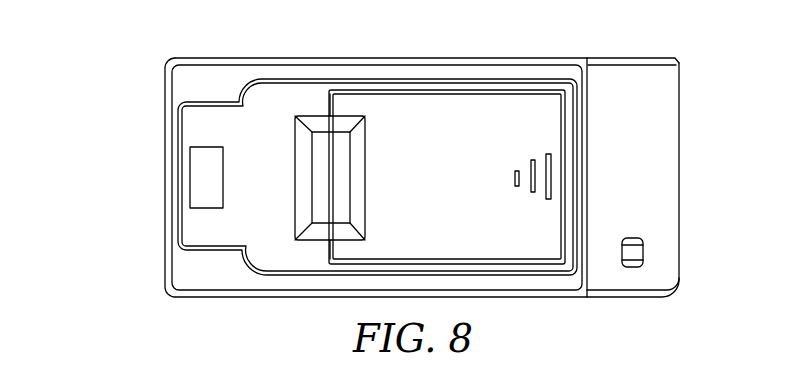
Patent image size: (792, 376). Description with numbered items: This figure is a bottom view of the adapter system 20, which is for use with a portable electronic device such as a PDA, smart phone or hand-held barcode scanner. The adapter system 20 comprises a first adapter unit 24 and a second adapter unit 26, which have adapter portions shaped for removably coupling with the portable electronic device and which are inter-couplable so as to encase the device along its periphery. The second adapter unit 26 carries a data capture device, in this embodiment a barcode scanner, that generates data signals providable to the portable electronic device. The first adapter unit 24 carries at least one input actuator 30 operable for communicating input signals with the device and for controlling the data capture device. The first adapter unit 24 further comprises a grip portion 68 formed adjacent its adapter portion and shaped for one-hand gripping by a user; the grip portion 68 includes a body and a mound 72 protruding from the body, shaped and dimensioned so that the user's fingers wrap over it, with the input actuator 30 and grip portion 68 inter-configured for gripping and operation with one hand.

The adapter system 20 is at (408, 37).
The first adapter unit 24 is at (481, 76).
The second adapter unit 26 is at (295, 58).
The input actuator 30 is at (660, 251).
The grip portion 68 is at (692, 55).
The mound 72 is at (670, 168).